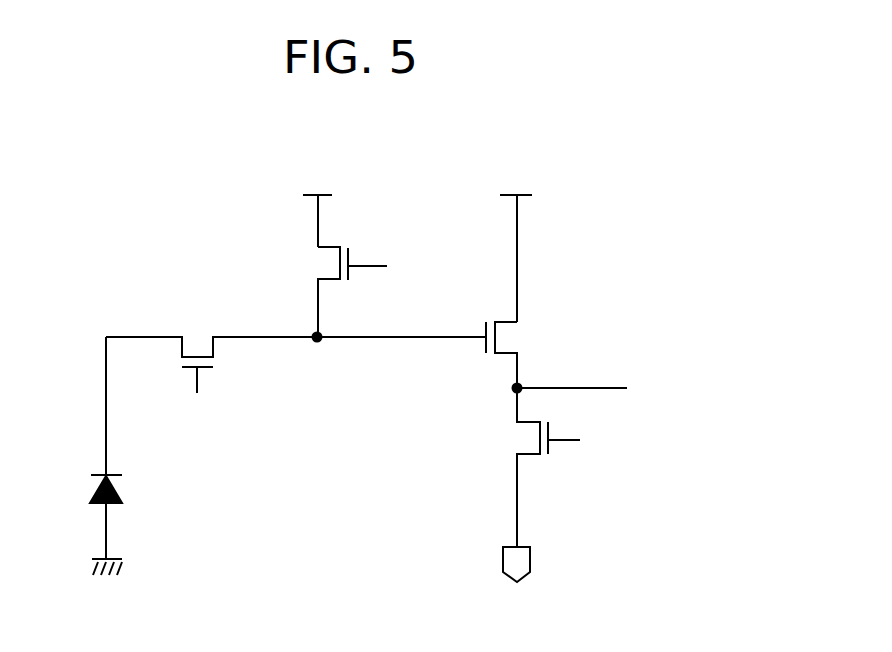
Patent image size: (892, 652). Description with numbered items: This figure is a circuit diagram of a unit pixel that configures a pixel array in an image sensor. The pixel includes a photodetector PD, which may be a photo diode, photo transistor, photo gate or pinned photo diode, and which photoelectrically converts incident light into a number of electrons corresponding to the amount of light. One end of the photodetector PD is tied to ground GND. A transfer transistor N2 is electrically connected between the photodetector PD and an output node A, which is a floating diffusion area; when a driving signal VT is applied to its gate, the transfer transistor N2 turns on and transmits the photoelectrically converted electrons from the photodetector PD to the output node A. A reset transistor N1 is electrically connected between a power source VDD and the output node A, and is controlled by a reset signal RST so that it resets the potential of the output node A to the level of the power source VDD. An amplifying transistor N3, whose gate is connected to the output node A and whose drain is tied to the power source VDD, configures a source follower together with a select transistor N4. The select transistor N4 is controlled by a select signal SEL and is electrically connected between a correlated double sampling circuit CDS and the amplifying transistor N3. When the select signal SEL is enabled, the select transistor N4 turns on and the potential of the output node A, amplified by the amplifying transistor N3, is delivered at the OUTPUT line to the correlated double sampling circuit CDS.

The reset transistor N1 is at (318, 292).
The transfer transistor N2 is at (197, 336).
The amplifying transistor N3 is at (515, 355).
The select transistor N4 is at (515, 467).
The photodetector PD is at (120, 493).
The output node A is at (317, 355).
The power source VDD is at (415, 243).
The reset signal RST is at (386, 268).
The driving signal VT is at (198, 399).
The select signal SEL is at (584, 442).
The output node OUTPUT is at (609, 389).
The correlated double sampling circuit CDS is at (518, 581).
The ground GND is at (107, 567).